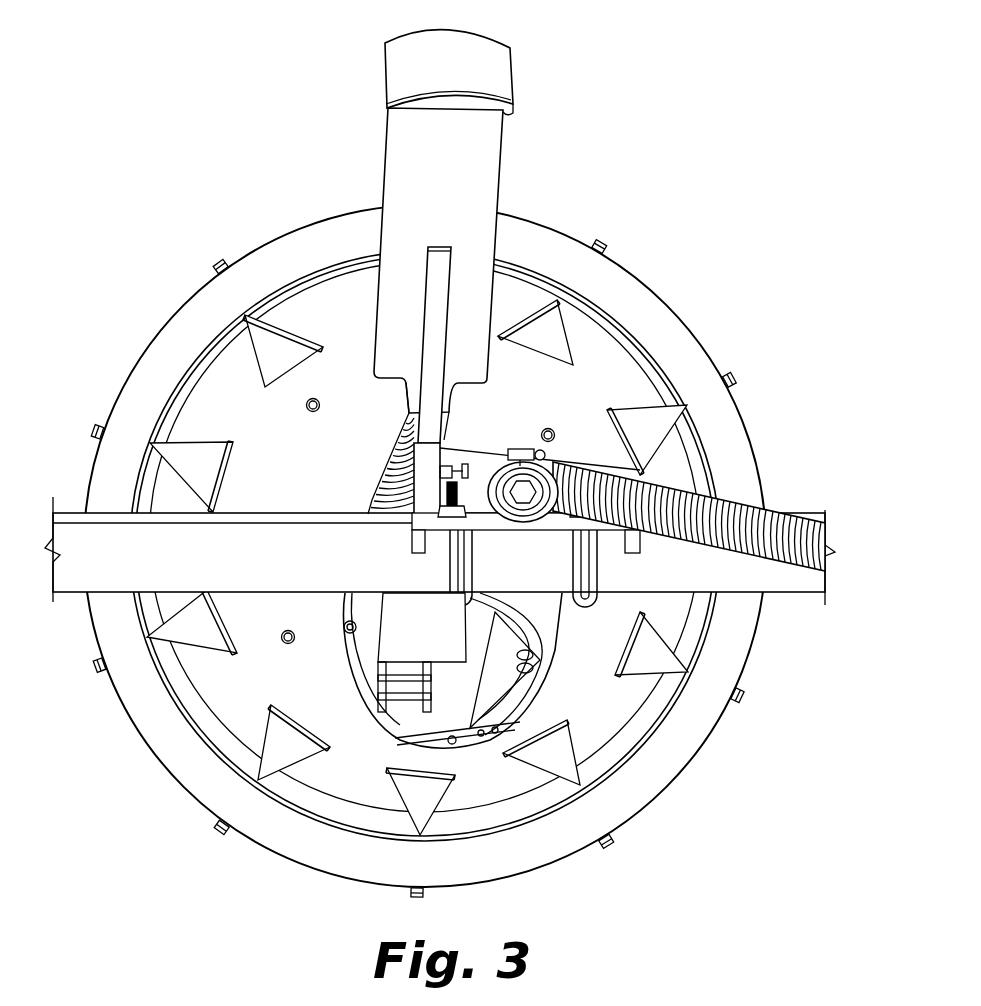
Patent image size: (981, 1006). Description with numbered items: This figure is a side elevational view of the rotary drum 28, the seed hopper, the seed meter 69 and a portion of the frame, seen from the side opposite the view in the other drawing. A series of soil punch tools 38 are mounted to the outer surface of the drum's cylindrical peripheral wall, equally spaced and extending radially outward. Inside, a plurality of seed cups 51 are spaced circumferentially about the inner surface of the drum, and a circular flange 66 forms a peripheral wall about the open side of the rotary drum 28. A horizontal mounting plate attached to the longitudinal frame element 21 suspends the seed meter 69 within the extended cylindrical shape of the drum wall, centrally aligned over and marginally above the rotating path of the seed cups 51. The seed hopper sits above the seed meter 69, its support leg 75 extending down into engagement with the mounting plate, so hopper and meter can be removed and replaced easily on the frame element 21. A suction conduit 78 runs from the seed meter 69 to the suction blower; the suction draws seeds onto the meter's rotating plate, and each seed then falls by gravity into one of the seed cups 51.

The longitudinal frame element 21 is at (222, 565).
The rotary drum 28 is at (418, 530).
The soil punch tools 38 is at (218, 262).
The seed cups 51 is at (277, 745).
The circular flange 66 is at (150, 732).
The seed meter 69 is at (428, 636).
The support leg 75 is at (437, 303).
The suction conduit 78 is at (770, 507).